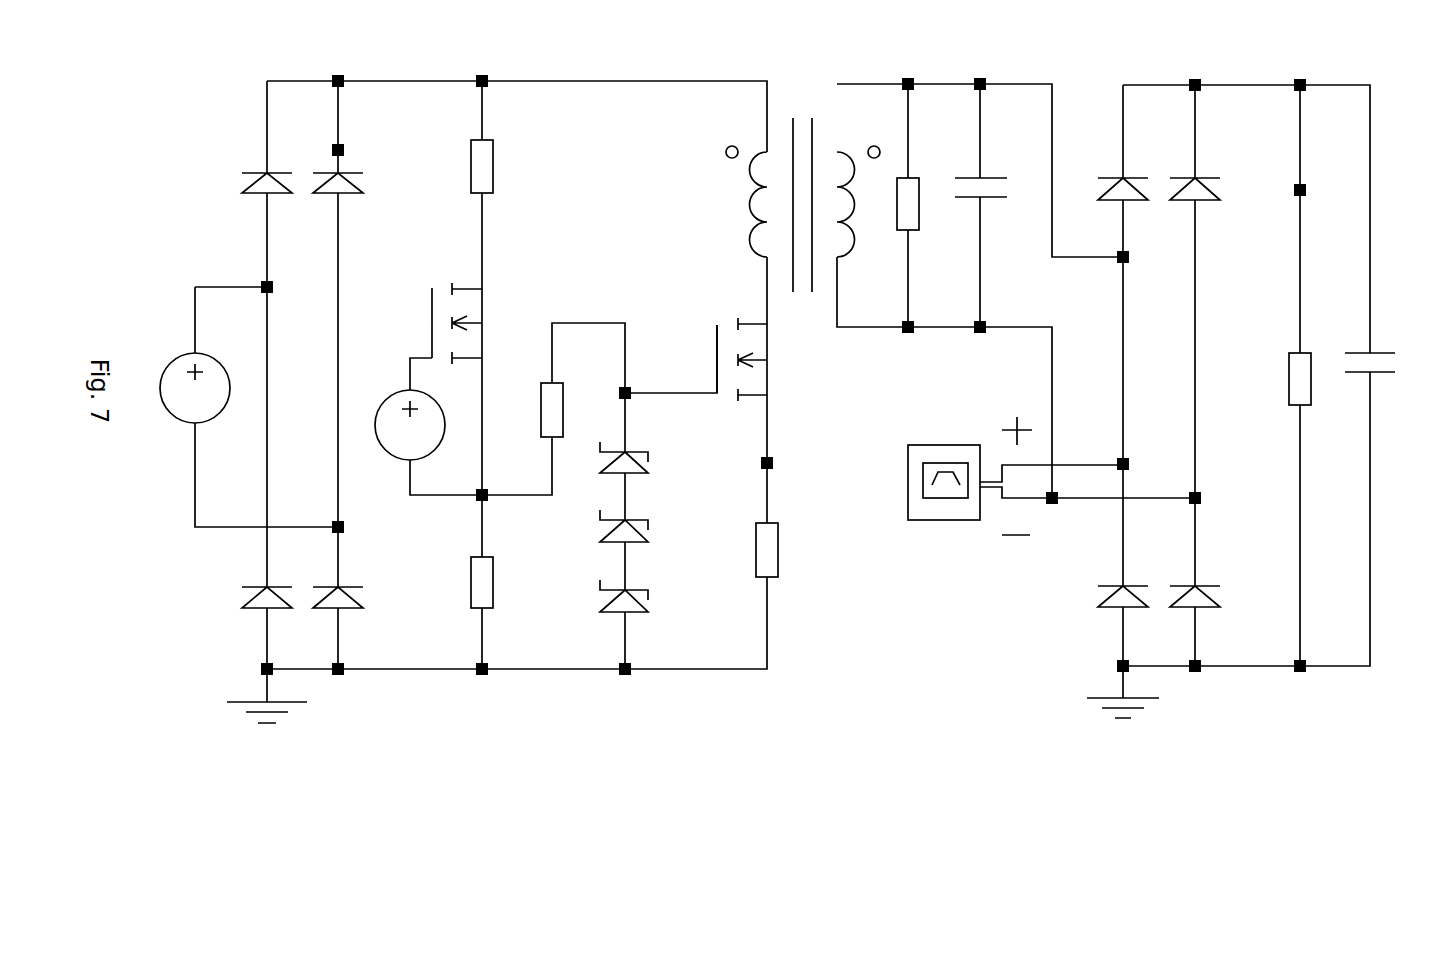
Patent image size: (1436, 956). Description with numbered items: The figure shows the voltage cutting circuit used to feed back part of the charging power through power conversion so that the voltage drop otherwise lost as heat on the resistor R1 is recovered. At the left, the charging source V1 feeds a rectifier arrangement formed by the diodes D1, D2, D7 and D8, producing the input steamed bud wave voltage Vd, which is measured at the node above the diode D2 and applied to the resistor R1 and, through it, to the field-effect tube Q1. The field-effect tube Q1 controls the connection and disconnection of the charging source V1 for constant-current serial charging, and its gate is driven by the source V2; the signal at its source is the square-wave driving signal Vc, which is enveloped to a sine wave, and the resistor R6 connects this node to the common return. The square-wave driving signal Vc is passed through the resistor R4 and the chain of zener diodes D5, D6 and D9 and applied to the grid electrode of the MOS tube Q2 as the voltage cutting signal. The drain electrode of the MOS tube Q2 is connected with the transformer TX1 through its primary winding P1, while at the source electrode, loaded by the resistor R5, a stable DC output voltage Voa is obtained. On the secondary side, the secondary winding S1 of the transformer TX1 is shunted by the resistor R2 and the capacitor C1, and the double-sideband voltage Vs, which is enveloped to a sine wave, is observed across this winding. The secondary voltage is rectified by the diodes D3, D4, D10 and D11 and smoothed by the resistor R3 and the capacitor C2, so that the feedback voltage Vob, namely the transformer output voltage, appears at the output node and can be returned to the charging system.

The diode D1 is at (279, 208).
The diode D2 is at (351, 207).
The diode D3 is at (1133, 173).
The diode D4 is at (1207, 176).
The zener diode D5 is at (610, 480).
The zener diode D6 is at (610, 548).
The diode D7 is at (278, 581).
The diode D8 is at (351, 584).
The zener diode D9 is at (607, 619).
The diode D10 is at (1132, 581).
The diode D11 is at (1207, 583).
The resistor R1 is at (504, 155).
The resistor R2 is at (929, 193).
The resistor R3 is at (1283, 365).
The resistor R4 is at (571, 393).
The resistor R5 is at (794, 557).
The resistor R6 is at (503, 570).
The capacitor C1 is at (992, 159).
The capacitor C2 is at (1359, 393).
The charging source V1 is at (205, 411).
The voltage source V2 is at (418, 443).
The field-effect tube Q1 is at (479, 323).
The MOS tube Q2 is at (765, 359).
The transformer TX1 is at (810, 186).
The primary winding P1 is at (732, 201).
The secondary winding S1 is at (863, 201).
The double-sideband voltage Vs is at (970, 471).
The input steamed bud wave voltage Vd is at (338, 150).
The square-wave driving signal Vc is at (482, 495).
The DC output voltage Voa is at (767, 463).
The feedback voltage Vob is at (1300, 190).